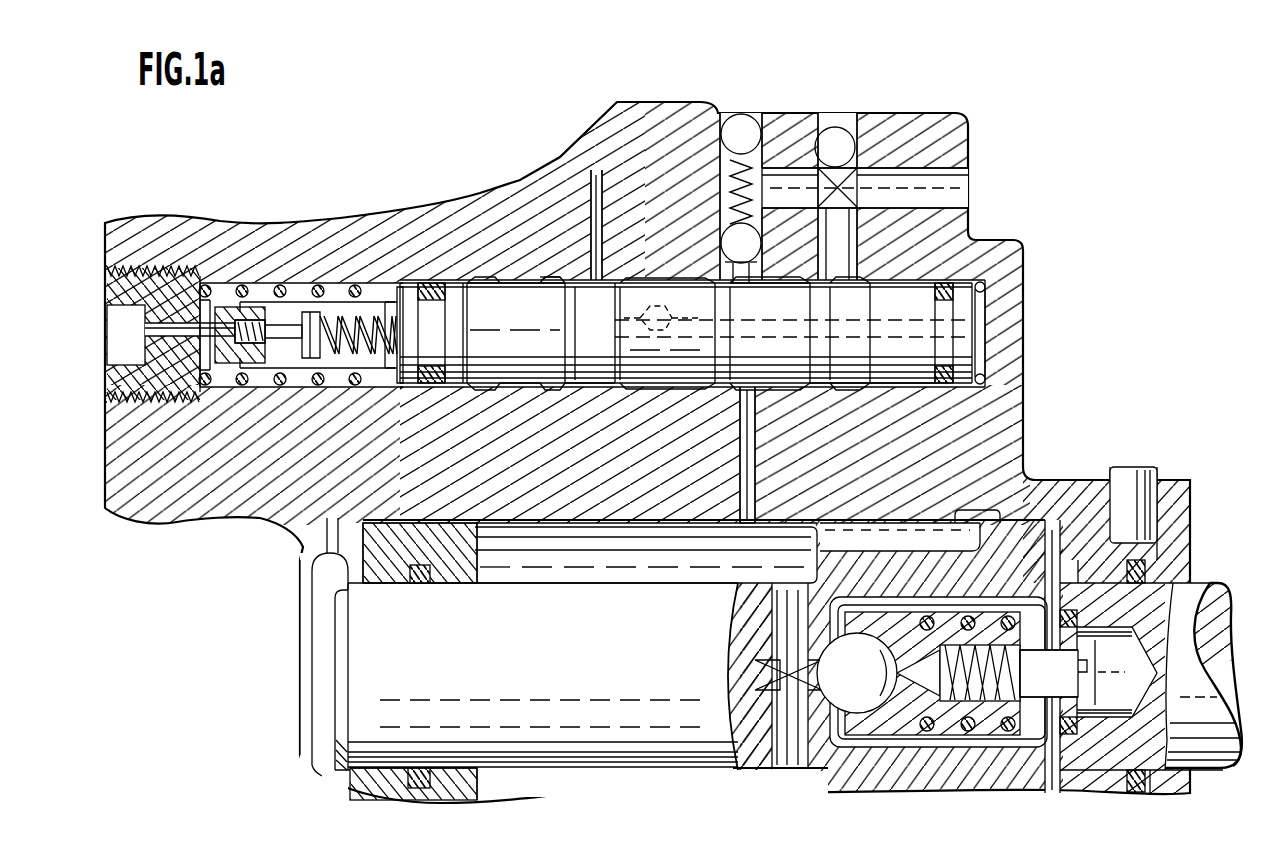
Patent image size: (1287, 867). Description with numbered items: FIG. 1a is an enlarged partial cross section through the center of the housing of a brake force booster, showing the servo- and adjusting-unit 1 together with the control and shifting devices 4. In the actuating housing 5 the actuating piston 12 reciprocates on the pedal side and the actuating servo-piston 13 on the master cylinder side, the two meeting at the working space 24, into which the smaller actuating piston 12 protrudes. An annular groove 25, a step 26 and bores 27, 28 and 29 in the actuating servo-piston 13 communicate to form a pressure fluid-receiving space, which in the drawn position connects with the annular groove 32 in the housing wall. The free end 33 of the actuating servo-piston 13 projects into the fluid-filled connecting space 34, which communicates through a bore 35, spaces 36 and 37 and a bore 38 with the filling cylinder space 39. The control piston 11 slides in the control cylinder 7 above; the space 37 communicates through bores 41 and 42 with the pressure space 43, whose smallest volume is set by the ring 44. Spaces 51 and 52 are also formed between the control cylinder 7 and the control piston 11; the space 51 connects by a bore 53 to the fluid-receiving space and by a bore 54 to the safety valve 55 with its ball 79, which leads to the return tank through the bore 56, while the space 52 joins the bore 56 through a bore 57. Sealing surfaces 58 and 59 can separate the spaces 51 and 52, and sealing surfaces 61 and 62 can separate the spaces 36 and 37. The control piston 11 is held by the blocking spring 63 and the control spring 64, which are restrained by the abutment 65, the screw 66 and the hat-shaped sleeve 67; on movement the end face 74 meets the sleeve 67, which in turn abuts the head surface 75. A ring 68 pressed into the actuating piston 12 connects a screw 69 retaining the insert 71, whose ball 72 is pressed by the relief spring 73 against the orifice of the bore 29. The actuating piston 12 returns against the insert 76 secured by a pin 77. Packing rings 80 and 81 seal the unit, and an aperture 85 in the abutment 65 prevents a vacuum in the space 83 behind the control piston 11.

The servo- and adjusting-unit 1 is at (290, 752).
The control and shifting devices 4 is at (1025, 246).
The actuating housing 5 is at (1178, 492).
The control cylinder 7 is at (1016, 368).
The control piston 11 is at (912, 298).
The actuating piston 12 is at (1130, 724).
The actuating servo-piston 13 is at (545, 592).
The working space 24 is at (1047, 547).
The annular groove 25 is at (899, 549).
The step 26 is at (549, 555).
The bore 27 is at (861, 537).
The bore 28 is at (776, 588).
The bore 29 is at (762, 660).
The annular groove 32 is at (971, 519).
The free end 33 is at (334, 668).
The connecting space 34 is at (302, 590).
The bore 35 is at (300, 550).
The space 36 is at (499, 280).
The space 37 is at (560, 280).
The bore 38 is at (590, 210).
The filling cylinder space 39 is at (575, 150).
The bore 41 is at (668, 312).
The bore 42 is at (740, 326).
The pressure space 43 is at (1000, 340).
The ring 44 is at (988, 284).
The space 51 is at (745, 390).
The space 52 is at (864, 390).
The bore 53 is at (735, 513).
The bore 54 is at (762, 250).
The safety valve 55 is at (724, 167).
The bore 56 is at (962, 192).
The bore 57 is at (850, 252).
The sealing surface 58 is at (802, 390).
The sealing surface 59 is at (822, 390).
The sealing surface 61 is at (530, 390).
The sealing surface 62 is at (595, 390).
The blocking spring 63 is at (396, 316).
The control spring 64 is at (222, 285).
The abutment 65 is at (105, 352).
The screw 66 is at (284, 318).
The hat-shaped sleeve 67 is at (336, 312).
The ring 68 is at (1053, 628).
The screw 69 is at (980, 720).
The insert 71 is at (858, 605).
The ball 72 is at (830, 695).
The relief spring 73 is at (928, 727).
The end face 74 is at (382, 382).
The head surface 75 is at (270, 380).
The insert 76 is at (1180, 552).
The pin 77 is at (1124, 470).
The ball 79 is at (725, 247).
The packing ring 80 is at (952, 386).
The packing ring 81 is at (428, 285).
The space 83 is at (262, 302).
The aperture 85 is at (145, 330).